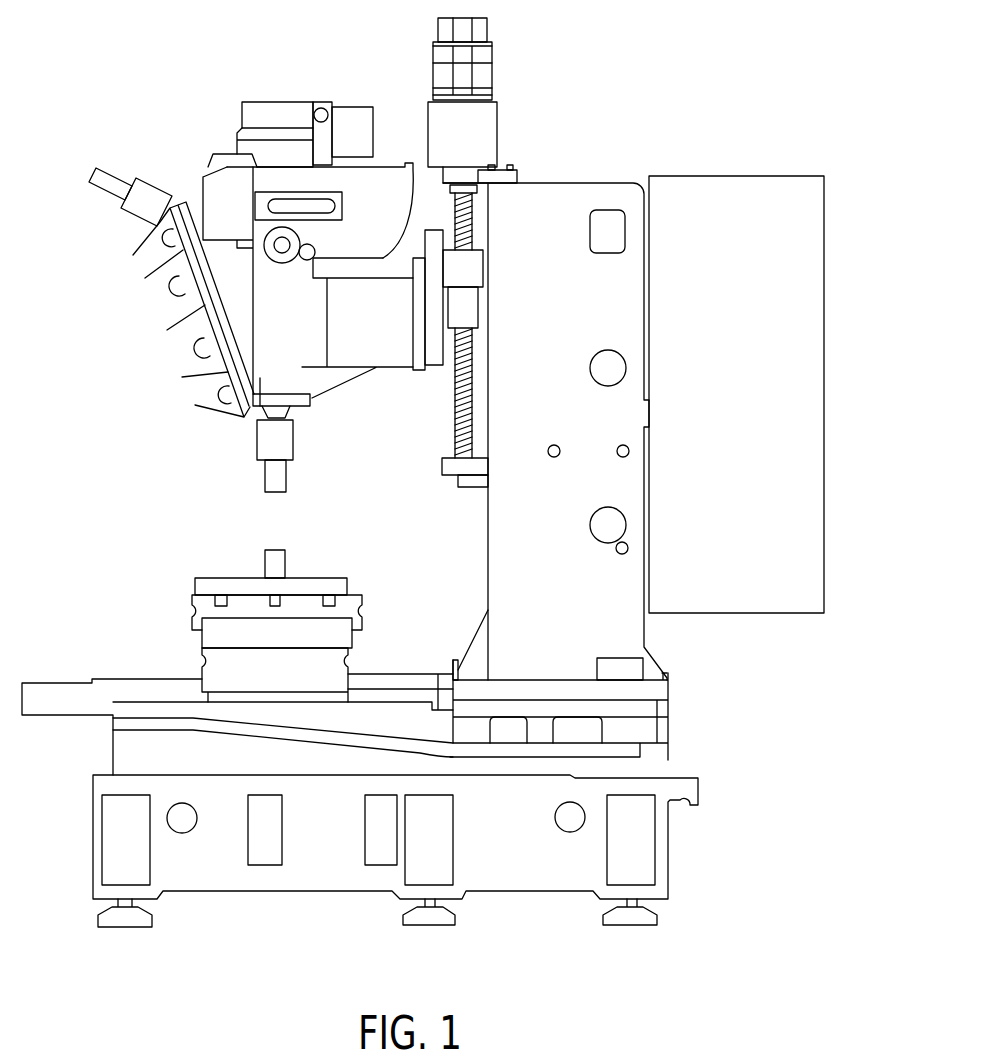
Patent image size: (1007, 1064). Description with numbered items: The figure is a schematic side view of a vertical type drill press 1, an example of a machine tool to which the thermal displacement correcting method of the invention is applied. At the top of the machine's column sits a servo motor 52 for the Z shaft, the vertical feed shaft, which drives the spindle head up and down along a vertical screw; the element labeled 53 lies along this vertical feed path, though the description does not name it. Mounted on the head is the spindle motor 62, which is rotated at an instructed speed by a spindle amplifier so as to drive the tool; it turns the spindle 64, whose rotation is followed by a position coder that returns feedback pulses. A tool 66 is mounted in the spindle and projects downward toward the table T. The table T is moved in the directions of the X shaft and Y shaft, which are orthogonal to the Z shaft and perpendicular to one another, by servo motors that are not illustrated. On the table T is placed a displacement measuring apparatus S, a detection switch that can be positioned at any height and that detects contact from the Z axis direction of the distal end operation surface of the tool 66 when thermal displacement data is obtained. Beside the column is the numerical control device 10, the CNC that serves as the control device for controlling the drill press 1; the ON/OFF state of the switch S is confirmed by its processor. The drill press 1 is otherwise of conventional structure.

The vertical type drill press 1 is at (720, 82).
The numerical control device 10 is at (825, 212).
The servo motor for a Z shaft 52 is at (482, 52).
The ball screw 53 is at (472, 212).
The spindle motor 62 is at (255, 110).
The spindle 64 is at (257, 412).
The tool 66 is at (288, 472).
The displacement measuring apparatus S is at (274, 548).
The table T is at (193, 615).